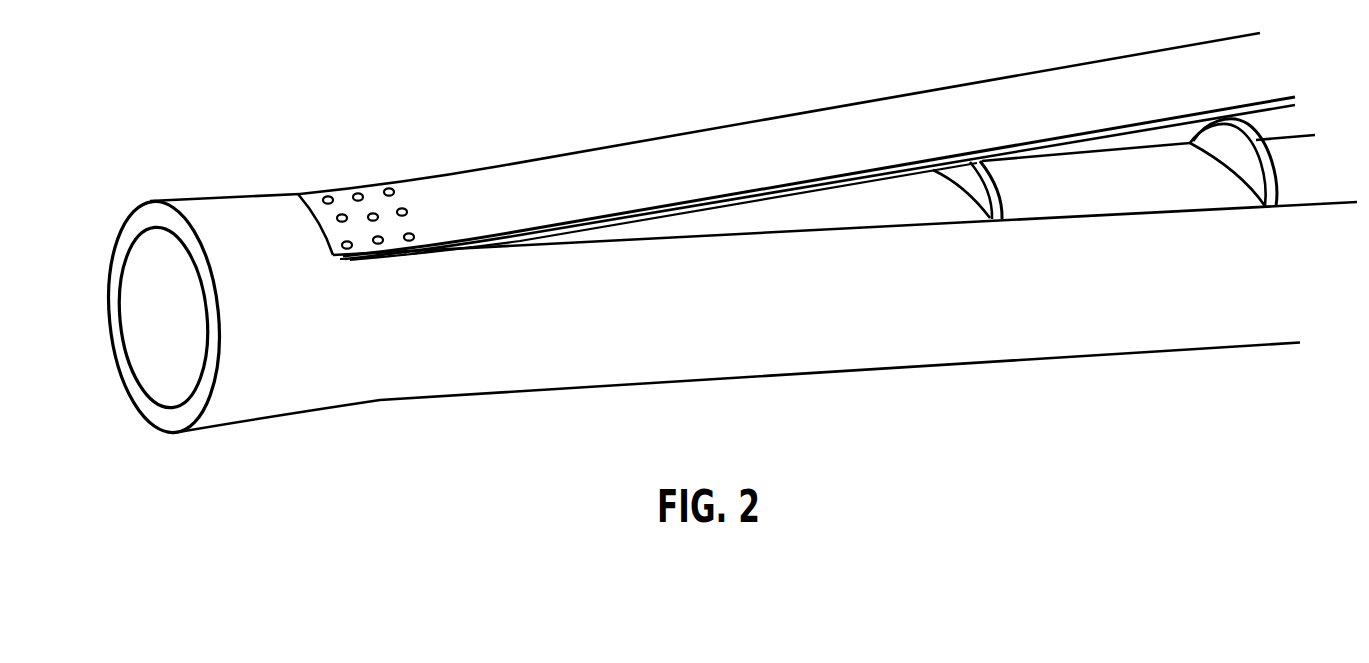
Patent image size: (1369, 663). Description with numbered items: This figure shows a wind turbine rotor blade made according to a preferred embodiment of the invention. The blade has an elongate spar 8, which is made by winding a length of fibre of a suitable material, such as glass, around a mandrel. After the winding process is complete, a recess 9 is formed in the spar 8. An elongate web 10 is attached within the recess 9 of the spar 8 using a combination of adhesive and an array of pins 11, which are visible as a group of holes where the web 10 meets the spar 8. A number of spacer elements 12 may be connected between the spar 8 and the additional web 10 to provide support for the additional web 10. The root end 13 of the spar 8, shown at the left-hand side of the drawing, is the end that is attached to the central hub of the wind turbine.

The spar 8 is at (435, 379).
The recess 9 is at (362, 262).
The web 10 is at (490, 176).
The pins 11 is at (389, 188).
The spacer elements 12 is at (995, 183).
The root end 13 is at (110, 317).